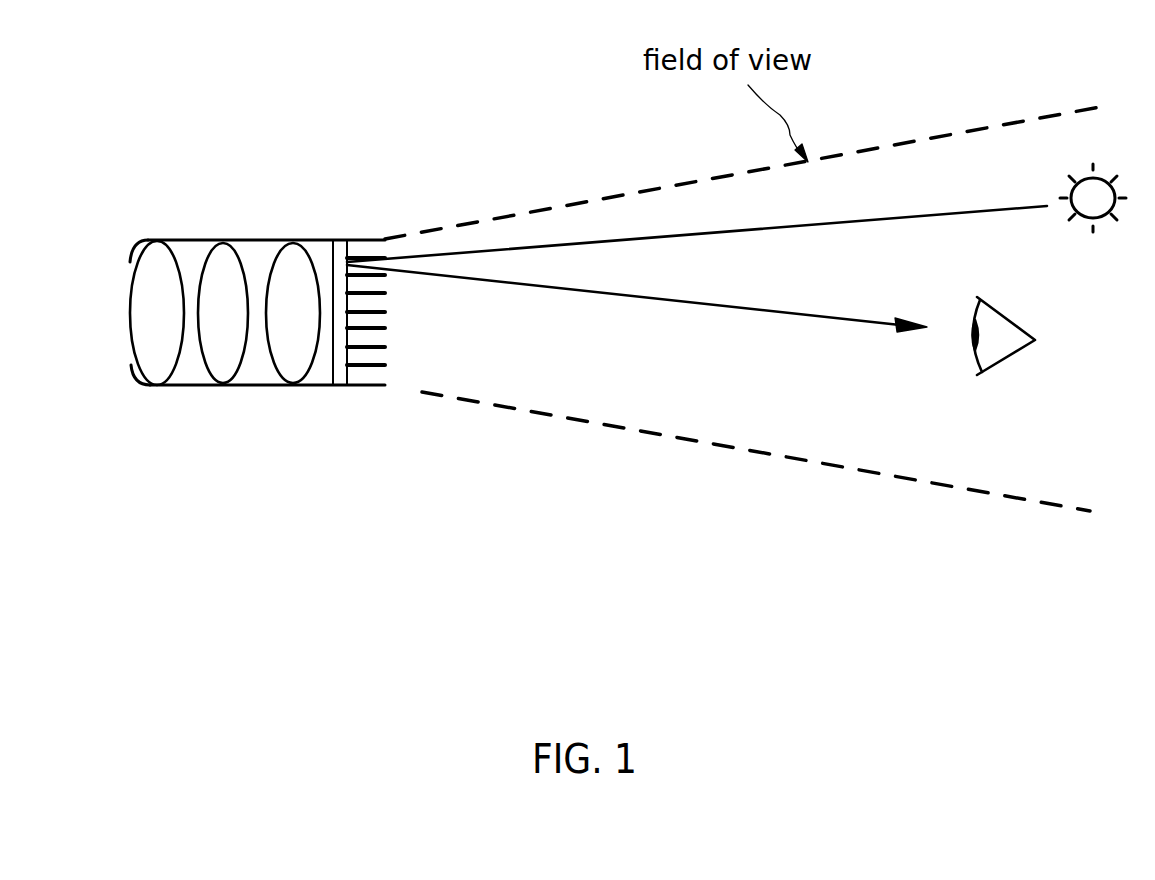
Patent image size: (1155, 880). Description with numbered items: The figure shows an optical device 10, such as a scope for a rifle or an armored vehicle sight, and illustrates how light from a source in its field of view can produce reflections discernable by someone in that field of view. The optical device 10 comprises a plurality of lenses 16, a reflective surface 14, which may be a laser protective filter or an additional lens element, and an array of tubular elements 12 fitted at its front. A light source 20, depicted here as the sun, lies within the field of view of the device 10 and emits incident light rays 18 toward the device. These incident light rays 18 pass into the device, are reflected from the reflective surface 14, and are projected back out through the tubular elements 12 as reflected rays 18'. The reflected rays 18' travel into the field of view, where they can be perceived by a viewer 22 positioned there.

The optical device 10 is at (195, 386).
The array of tubular elements 12 is at (380, 328).
The reflective surface 14 is at (340, 258).
The plurality of lenses 16 is at (287, 253).
The incident light rays 18 is at (697, 219).
The reflected rays 18' is at (637, 316).
The light source 20 is at (1090, 172).
The viewer 22 is at (1005, 360).